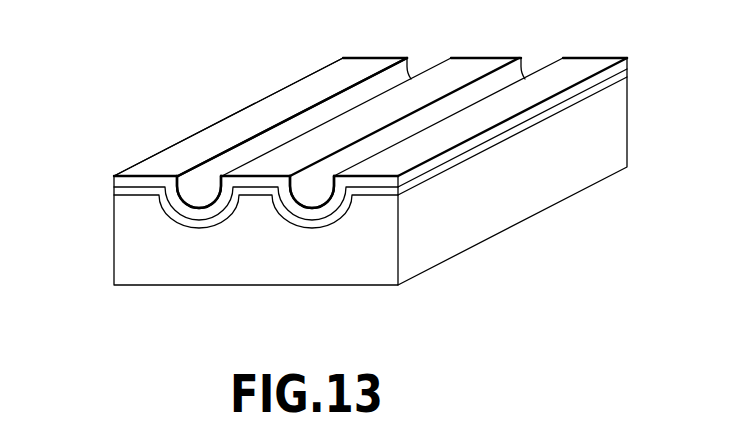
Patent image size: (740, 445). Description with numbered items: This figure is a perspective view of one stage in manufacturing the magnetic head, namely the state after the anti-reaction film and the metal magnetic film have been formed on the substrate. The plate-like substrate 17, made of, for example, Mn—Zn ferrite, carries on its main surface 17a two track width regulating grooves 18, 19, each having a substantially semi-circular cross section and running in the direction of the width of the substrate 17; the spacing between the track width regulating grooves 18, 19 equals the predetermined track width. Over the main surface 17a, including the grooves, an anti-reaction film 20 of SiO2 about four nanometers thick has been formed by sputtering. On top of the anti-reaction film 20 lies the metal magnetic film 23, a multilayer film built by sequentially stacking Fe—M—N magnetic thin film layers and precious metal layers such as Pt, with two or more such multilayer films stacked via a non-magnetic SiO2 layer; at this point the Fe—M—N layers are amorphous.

The substrate 17 is at (508, 203).
The main surface 17a is at (141, 197).
The track width regulating groove 18 is at (193, 229).
The track width regulating groove 19 is at (305, 229).
The anti-reaction film 20 is at (367, 185).
The metal magnetic film 23 is at (270, 118).